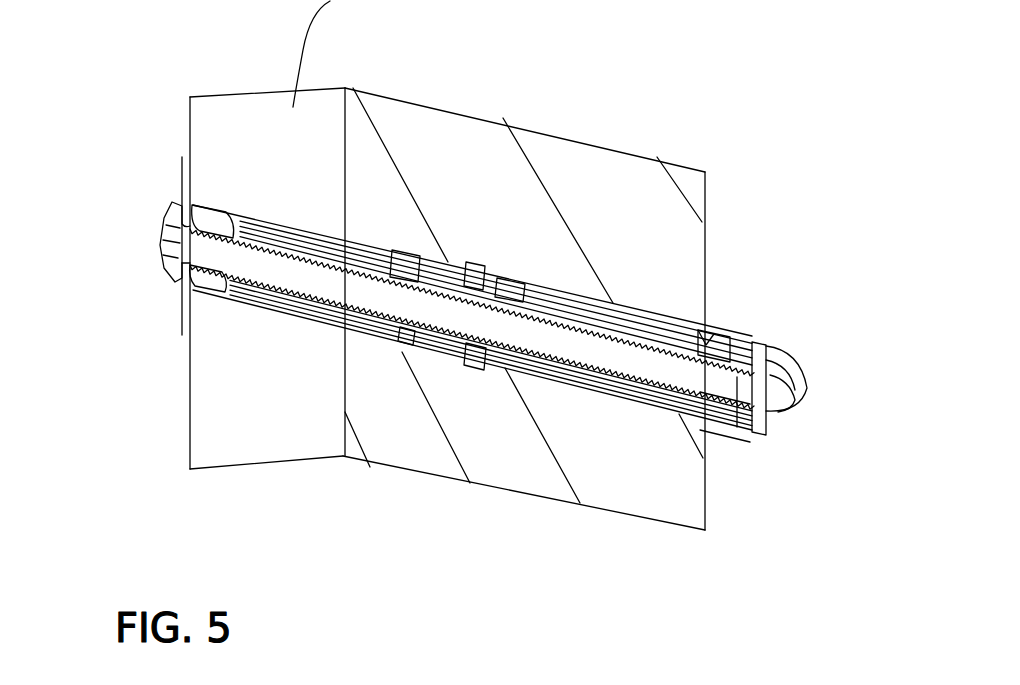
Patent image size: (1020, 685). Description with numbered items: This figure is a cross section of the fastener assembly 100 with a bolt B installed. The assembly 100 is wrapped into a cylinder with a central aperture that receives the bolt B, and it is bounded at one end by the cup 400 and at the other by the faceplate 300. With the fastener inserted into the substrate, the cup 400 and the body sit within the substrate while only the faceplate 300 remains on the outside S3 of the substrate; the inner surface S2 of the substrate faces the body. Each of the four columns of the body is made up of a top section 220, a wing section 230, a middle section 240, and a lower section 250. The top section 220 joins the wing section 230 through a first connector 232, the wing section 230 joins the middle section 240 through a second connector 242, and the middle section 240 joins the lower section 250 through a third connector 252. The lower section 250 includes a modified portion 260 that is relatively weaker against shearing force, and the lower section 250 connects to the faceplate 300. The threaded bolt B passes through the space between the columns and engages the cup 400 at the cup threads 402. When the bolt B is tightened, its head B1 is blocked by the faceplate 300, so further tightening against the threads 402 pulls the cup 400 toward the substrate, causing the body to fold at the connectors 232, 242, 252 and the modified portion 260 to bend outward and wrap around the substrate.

The fastener assembly 100 is at (491, 294).
The faceplate 300 is at (384, 265).
The inner surface of the substrate S2 is at (190, 98).
The outside of the substrate S3 is at (388, 198).
The head of the bolt B1 is at (173, 213).
The bolt B is at (800, 390).
The modified portion 260 is at (288, 227).
The third connector 252 is at (477, 262).
The second connector 242 is at (510, 278).
The first connector 232 is at (706, 333).
The wing section 230 is at (617, 394).
The middle section 240 is at (481, 365).
The lower section 250 is at (463, 365).
The top section 220 is at (736, 380).
The cup threads 402 is at (740, 350).
The cup 400 is at (777, 354).